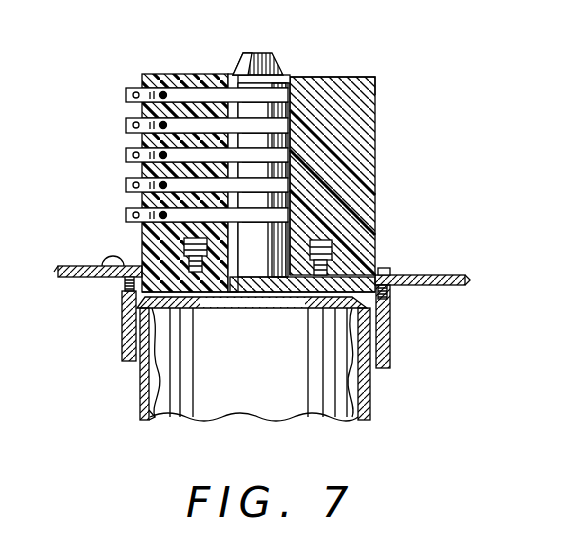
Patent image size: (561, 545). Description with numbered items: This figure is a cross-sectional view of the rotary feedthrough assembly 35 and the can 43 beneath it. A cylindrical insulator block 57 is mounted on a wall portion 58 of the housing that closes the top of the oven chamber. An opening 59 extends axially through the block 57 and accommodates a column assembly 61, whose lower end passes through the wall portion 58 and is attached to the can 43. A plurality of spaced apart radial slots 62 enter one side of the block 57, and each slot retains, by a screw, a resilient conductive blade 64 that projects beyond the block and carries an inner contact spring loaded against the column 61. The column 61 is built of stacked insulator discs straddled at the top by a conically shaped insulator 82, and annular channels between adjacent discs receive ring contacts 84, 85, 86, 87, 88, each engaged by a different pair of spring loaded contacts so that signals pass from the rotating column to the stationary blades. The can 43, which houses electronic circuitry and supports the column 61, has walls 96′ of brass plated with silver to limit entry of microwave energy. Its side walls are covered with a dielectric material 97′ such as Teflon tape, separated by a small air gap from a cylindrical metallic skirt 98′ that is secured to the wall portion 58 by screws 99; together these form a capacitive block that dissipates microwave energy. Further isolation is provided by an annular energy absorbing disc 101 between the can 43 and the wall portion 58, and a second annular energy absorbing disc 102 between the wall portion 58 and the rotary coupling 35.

The rotary feedthrough assembly 35 is at (423, 136).
The can 43 is at (322, 382).
The cylindrical insulator block 57 is at (376, 116).
The wall portion 58 is at (66, 266).
The opening 59 is at (292, 76).
The column assembly 61 is at (287, 57).
The radial slots 62 is at (216, 98).
The resilient conductive blade 64 is at (126, 184).
The conically shaped insulator 82 is at (262, 70).
The ring contact 84 is at (292, 92).
The ring contact 85 is at (376, 79).
The ring contact 86 is at (376, 166).
The ring contact 87 is at (376, 198).
The ring contact 88 is at (376, 226).
The walls of the can 96′ is at (140, 413).
The dielectric material 97′ is at (140, 388).
The cylindrical metallic skirt 98′ is at (122, 341).
The screws 99 is at (103, 277).
The energy absorbing disc 101 is at (368, 314).
The energy absorbing disc 102 is at (141, 240).